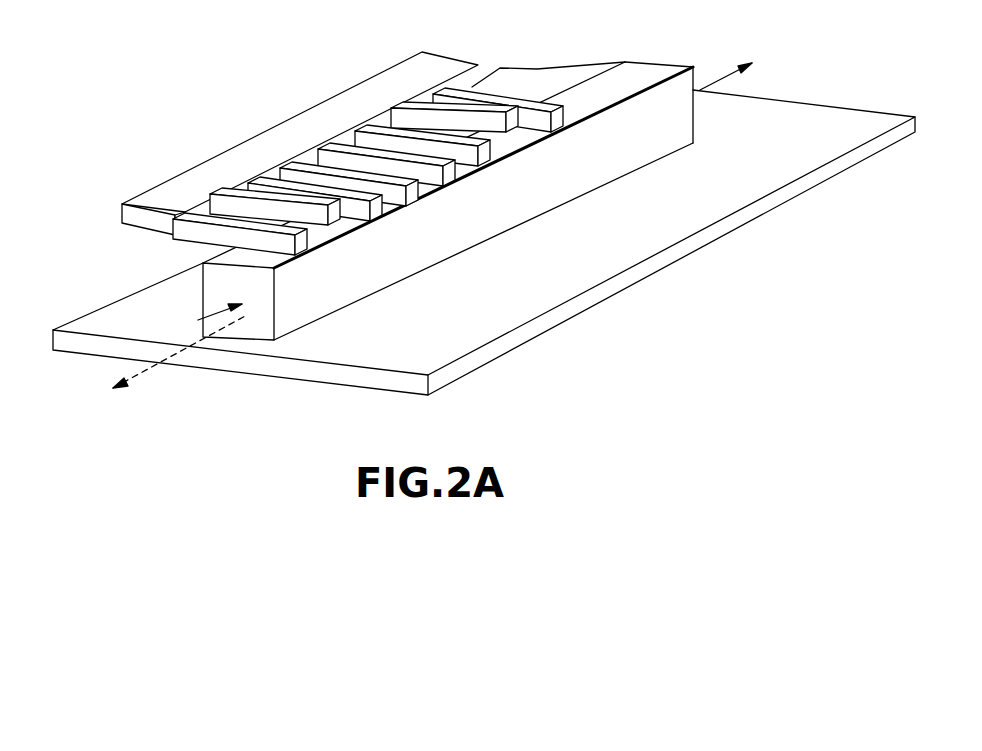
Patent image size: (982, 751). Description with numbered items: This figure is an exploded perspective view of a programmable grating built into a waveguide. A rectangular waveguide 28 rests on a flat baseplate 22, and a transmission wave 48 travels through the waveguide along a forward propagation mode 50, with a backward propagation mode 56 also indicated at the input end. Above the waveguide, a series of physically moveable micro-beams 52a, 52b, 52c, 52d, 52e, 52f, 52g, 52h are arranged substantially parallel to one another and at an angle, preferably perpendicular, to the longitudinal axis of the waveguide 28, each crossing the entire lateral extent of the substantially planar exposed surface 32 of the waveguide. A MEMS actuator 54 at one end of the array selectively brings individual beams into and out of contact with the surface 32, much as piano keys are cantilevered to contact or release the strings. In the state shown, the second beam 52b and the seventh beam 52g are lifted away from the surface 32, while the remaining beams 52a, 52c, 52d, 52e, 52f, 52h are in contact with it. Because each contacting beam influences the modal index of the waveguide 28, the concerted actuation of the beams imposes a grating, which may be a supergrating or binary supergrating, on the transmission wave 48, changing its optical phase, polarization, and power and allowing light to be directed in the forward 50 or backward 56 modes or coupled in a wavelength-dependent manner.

The baseplate 22 is at (807, 187).
The waveguide 28 is at (253, 328).
The surface of the waveguide 32 is at (637, 67).
The transmission wave 48 is at (148, 357).
The forward propagation mode 50 is at (715, 78).
The MEMS actuator 54 is at (143, 197).
The backward propagation mode 56 is at (143, 372).
The first beam 52a is at (180, 210).
The second beam 52b is at (222, 187).
The third beam 52c is at (262, 175).
The fourth beam 52d is at (292, 160).
The fifth beam 52e is at (330, 141).
The sixth beam 52f is at (375, 118).
The seventh beam 52g is at (415, 100).
The eighth beam 52h is at (470, 90).